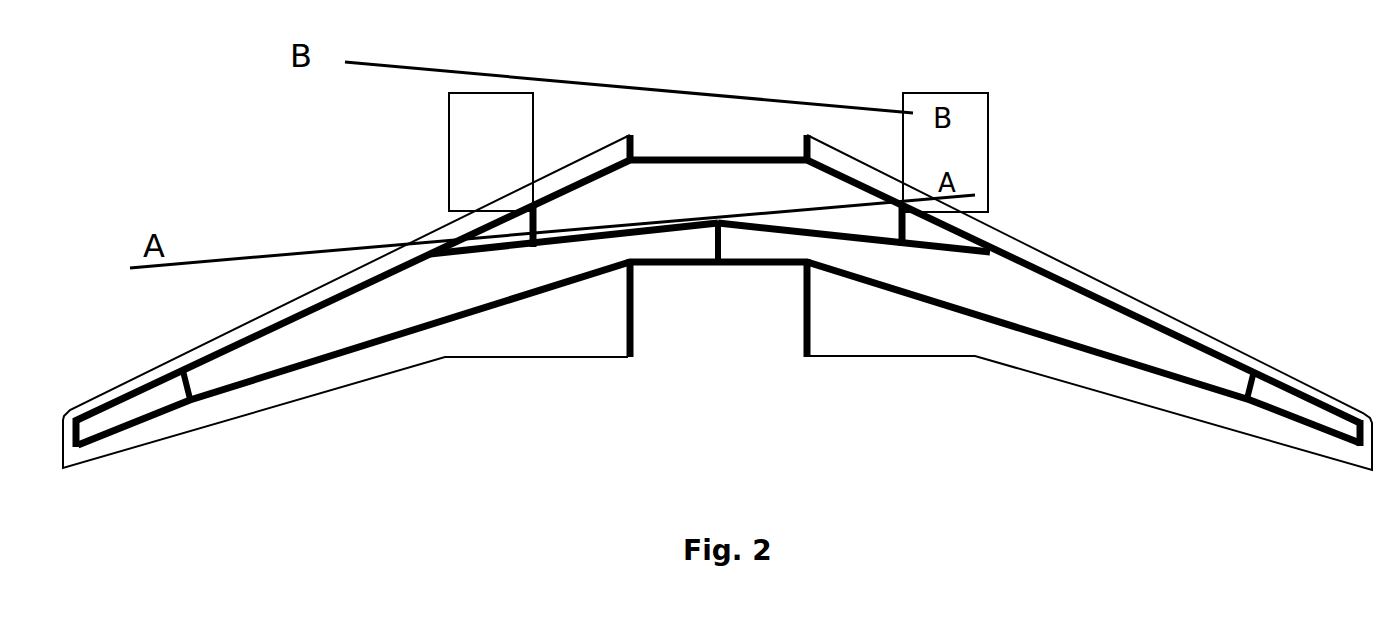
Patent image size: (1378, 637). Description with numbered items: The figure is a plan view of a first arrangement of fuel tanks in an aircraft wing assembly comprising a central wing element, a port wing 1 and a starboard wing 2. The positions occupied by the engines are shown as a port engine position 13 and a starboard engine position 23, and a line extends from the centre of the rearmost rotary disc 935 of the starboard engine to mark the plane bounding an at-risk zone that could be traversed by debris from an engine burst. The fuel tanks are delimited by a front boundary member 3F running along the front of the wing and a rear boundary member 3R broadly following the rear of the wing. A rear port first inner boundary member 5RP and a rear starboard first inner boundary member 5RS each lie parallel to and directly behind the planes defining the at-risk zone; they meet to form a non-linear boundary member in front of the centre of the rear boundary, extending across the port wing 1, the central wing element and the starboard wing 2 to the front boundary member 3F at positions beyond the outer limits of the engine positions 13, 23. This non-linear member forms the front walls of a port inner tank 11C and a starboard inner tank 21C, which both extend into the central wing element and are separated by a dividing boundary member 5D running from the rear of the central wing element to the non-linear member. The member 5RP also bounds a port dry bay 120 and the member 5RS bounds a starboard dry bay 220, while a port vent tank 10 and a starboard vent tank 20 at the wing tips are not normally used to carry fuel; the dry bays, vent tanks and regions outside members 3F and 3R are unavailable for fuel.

The port wing 1 is at (362, 388).
The starboard wing 2 is at (1157, 410).
The port vent tank 10 is at (133, 427).
The starboard vent tank 20 is at (1327, 428).
The front boundary member 3F is at (652, 159).
The rear boundary member 3R is at (687, 267).
The rear port first inner boundary member 5RP is at (587, 243).
The rear starboard first inner boundary member 5RS is at (867, 243).
The dividing boundary member 5D is at (722, 248).
The port dry bay 120 is at (520, 228).
The starboard dry bay 220 is at (967, 230).
The port inner tank 11C is at (448, 297).
The starboard inner tank 21C is at (1183, 362).
The port engine position 13 is at (449, 138).
The starboard engine position 23 is at (988, 138).
The rearmost rotary disc 935 is at (972, 195).